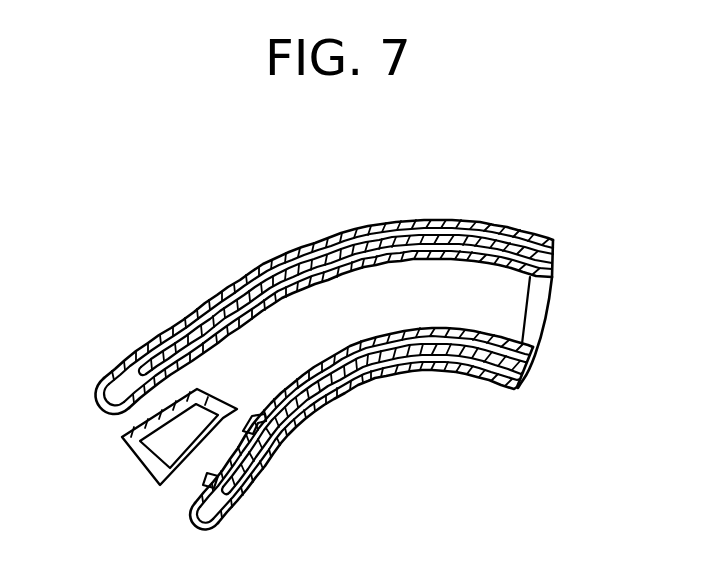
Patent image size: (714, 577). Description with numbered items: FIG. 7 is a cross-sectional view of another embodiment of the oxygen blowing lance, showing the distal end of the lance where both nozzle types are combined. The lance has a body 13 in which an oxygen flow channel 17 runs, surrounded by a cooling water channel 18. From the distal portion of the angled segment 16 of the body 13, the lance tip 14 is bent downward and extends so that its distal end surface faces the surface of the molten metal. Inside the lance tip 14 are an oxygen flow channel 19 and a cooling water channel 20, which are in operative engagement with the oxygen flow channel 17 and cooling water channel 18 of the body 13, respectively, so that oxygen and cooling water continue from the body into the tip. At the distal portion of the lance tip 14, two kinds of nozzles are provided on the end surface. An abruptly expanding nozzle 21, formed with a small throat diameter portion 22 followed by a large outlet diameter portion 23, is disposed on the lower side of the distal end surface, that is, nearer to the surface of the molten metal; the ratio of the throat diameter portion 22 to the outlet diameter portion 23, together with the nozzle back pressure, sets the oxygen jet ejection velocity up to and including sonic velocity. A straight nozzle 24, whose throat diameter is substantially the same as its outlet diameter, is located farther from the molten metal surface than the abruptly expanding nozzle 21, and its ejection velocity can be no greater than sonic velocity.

The body 13 is at (522, 250).
The angled segment 16 is at (408, 328).
The lance tip 14 is at (375, 220).
The cooling water channel 20 is at (445, 258).
The cooling water channel 18 is at (555, 270).
The oxygen flow channel 17 is at (535, 322).
The oxygen flow channel 19 is at (320, 310).
The abruptly expanding nozzle 21 is at (183, 485).
The small throat diameter portion 22 is at (283, 410).
The large outlet diameter portion 23 is at (233, 506).
The straight nozzle 24 is at (123, 420).